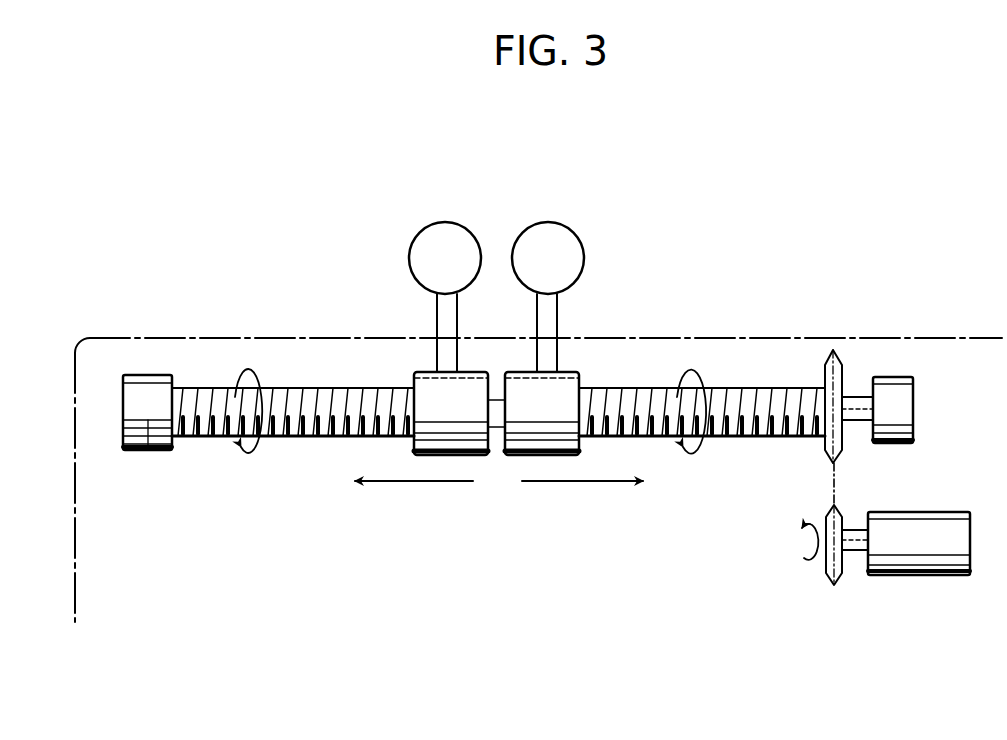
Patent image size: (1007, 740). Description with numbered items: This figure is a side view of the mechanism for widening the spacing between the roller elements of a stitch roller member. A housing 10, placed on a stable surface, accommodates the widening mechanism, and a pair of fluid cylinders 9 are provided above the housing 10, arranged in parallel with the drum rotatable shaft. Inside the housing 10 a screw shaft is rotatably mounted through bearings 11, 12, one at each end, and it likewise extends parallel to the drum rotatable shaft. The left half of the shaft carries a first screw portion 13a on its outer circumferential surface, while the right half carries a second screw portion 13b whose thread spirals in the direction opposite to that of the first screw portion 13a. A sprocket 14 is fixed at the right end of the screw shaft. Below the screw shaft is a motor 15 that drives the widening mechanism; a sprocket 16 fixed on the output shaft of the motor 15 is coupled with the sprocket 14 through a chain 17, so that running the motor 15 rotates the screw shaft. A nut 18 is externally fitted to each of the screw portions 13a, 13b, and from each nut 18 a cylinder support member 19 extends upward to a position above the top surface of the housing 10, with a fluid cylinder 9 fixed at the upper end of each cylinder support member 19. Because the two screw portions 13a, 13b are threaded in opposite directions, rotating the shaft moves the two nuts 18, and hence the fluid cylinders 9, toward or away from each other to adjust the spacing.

The fluid cylinder 9 is at (424, 243).
The housing 10 is at (140, 338).
The bearing 11 is at (146, 450).
The bearing 12 is at (905, 410).
The first screw portion 13a is at (302, 392).
The second screw portion 13b is at (766, 392).
The sprocket 14 is at (838, 368).
The motor 15 is at (925, 528).
The sprocket 16 is at (842, 578).
The chain 17 is at (830, 492).
The nut 18 is at (432, 384).
The cylinder support member 19 is at (442, 318).